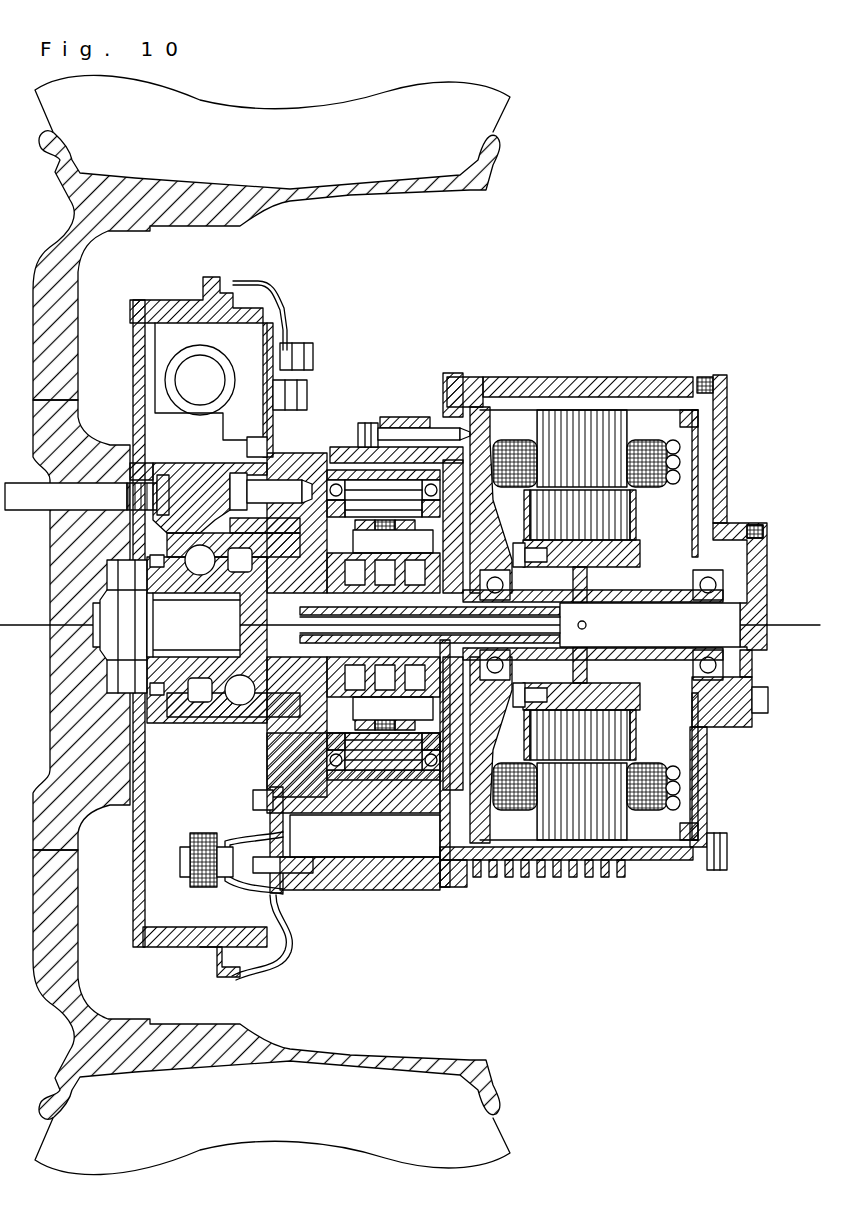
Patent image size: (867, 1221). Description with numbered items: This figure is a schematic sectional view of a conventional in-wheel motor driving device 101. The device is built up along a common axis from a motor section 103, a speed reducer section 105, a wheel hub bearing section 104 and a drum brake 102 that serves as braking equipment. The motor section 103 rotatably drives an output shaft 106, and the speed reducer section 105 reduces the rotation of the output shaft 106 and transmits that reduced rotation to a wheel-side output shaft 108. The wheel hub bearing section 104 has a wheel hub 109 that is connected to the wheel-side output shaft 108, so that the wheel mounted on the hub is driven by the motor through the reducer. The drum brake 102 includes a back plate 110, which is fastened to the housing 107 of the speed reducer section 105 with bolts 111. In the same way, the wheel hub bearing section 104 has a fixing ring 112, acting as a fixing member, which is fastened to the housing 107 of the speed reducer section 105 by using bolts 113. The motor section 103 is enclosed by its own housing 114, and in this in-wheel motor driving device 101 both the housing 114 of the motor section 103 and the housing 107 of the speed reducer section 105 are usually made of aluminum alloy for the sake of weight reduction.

The in-wheel motor driving device 101 is at (576, 222).
The drum brake 102 is at (175, 285).
The motor section 103 is at (755, 983).
The wheel hub bearing section 104 is at (273, 983).
The speed reducer section 105 is at (458, 983).
The output shaft 106 is at (690, 557).
The housing 107 is at (330, 443).
The wheel-side output shaft 108 is at (215, 692).
The wheel hub 109 is at (157, 695).
The back plate 110 is at (282, 318).
The bolts 111 is at (257, 430).
The fixing ring 112 is at (240, 528).
The bolts 113 is at (230, 477).
The housing 114 is at (613, 378).